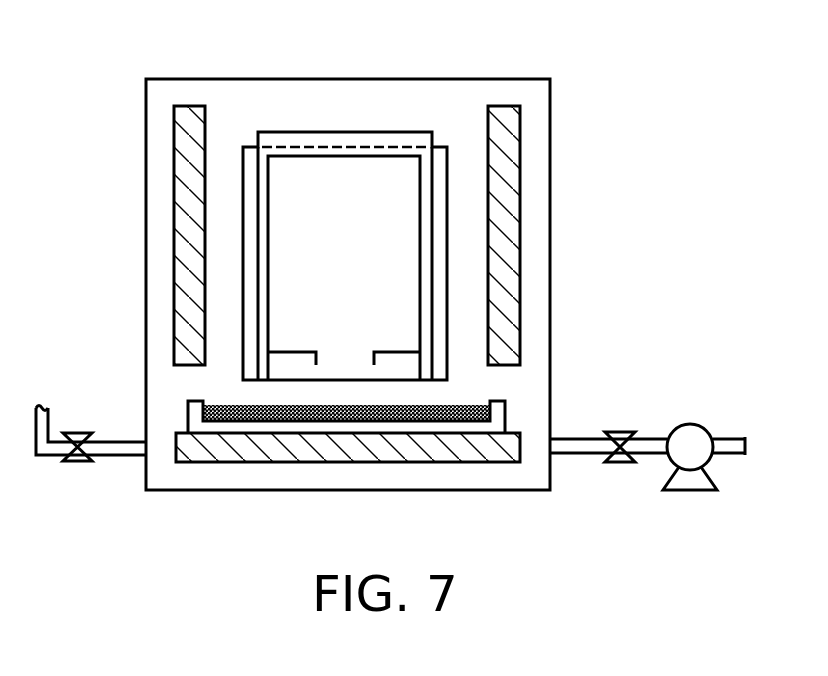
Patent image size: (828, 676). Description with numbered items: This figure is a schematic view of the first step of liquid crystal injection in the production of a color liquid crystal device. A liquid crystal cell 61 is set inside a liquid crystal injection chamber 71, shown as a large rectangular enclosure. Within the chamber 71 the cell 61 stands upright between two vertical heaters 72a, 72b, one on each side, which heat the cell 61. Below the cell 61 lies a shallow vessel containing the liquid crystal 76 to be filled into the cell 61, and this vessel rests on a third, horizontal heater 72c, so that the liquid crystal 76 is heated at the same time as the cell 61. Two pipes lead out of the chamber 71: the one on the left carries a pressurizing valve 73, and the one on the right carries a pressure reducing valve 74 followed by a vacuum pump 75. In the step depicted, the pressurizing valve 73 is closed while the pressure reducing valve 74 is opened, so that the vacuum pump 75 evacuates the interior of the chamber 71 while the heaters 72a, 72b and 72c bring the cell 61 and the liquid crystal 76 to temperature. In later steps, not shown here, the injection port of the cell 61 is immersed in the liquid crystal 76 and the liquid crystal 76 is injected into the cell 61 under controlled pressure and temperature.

The liquid crystal injection chamber 71 is at (551, 165).
The heater 72a is at (189, 113).
The heater 72b is at (501, 113).
The heater 72c is at (239, 452).
The liquid crystal cell 61 is at (380, 130).
The liquid crystal 76 is at (468, 401).
The pressurizing valve 73 is at (77, 433).
The pressure reducing valve 74 is at (615, 432).
The vacuum pump 75 is at (704, 432).